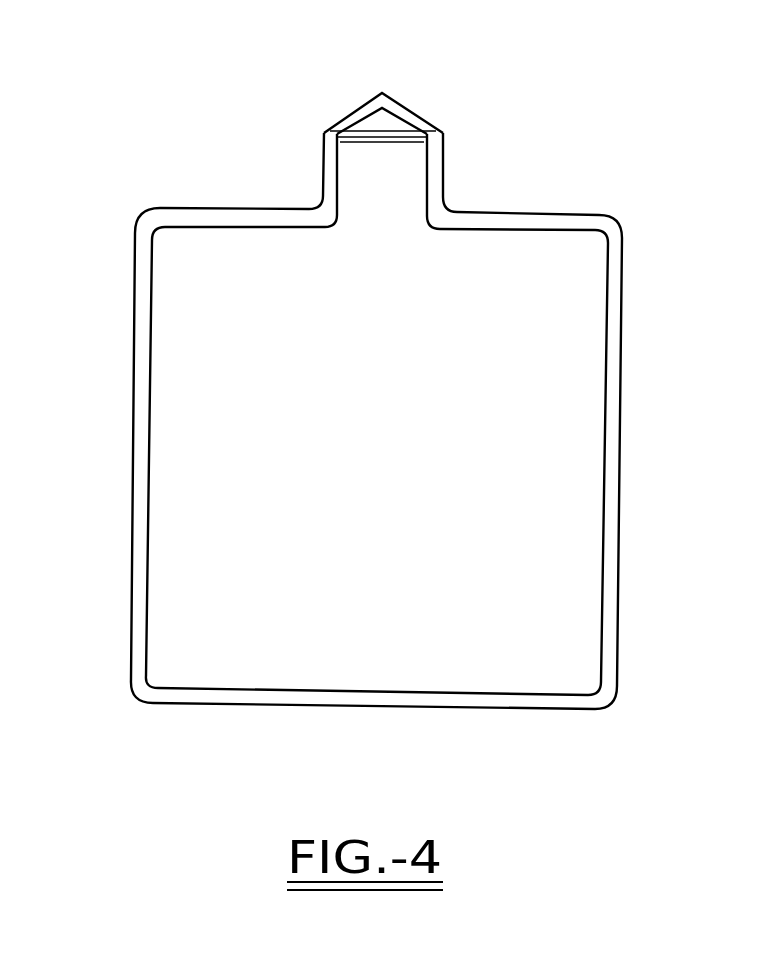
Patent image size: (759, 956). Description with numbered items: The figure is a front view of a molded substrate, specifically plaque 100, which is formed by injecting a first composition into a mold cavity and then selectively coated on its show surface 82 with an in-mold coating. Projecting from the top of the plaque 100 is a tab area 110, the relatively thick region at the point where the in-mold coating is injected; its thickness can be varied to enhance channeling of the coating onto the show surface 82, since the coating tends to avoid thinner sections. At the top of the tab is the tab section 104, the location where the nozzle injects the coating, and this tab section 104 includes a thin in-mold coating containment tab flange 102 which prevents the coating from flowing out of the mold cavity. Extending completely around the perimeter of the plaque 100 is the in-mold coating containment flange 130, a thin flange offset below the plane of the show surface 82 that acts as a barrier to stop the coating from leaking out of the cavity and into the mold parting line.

The show surface 82 is at (498, 455).
The plaque 100 is at (430, 413).
The in-mold coating containment tab flange 102 is at (375, 118).
The tab section 104 is at (383, 123).
The tab area 110 is at (360, 173).
The in-mold coating containment flange 130 is at (615, 509).